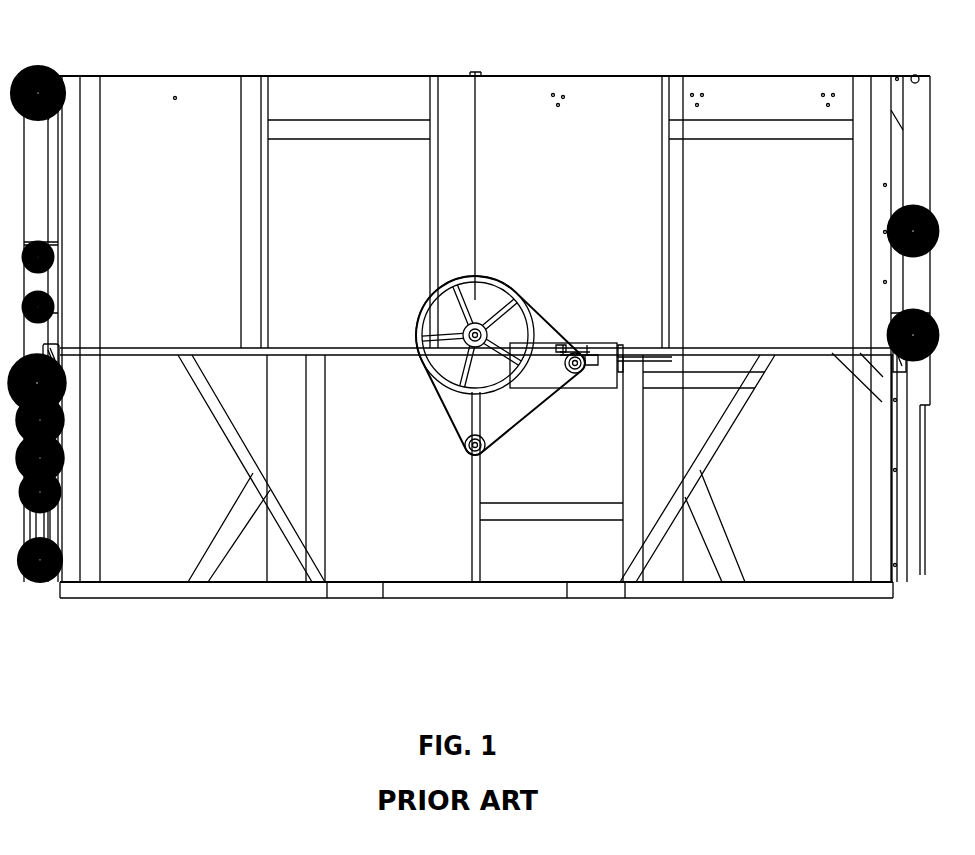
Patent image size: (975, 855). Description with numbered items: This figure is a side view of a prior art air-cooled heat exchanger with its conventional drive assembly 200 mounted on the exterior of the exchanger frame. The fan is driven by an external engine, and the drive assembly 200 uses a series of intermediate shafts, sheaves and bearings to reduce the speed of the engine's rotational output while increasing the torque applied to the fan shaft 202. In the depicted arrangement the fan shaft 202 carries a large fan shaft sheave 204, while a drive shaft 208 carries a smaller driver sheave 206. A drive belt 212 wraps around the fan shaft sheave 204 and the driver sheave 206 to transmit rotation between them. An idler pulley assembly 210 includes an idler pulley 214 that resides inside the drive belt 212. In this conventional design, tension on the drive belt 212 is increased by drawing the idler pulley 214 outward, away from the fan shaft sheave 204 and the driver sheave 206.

The drive assembly 200 is at (474, 310).
The fan shaft 202 is at (480, 326).
The fan shaft sheave 204 is at (457, 292).
The driver sheave 206 is at (462, 438).
The drive shaft 208 is at (473, 457).
The idler pulley assembly 210 is at (603, 367).
The drive belt 212 is at (560, 334).
The idler pulley 214 is at (563, 370).